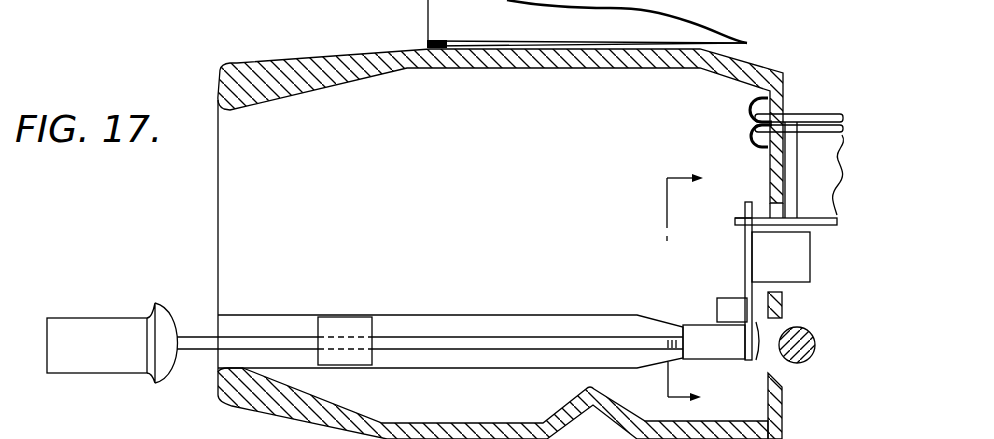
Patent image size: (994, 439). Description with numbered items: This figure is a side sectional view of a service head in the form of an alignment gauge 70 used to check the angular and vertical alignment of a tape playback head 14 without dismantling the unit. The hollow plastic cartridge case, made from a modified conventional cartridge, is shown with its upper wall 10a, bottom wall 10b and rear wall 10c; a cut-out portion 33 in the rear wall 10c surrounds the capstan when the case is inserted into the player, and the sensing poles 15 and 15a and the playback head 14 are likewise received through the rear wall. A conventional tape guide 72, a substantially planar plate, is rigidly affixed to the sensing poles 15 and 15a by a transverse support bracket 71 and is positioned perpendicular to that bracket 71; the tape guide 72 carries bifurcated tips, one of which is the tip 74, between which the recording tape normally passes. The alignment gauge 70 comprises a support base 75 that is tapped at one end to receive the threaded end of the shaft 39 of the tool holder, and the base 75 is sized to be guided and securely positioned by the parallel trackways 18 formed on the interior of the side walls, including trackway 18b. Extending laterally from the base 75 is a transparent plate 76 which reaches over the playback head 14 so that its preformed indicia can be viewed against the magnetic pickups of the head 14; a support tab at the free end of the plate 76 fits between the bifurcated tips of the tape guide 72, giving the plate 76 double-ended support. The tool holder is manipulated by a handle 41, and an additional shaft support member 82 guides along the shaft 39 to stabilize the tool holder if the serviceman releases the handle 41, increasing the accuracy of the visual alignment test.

The upper wall 10a is at (482, 70).
The bottom wall 10b is at (418, 424).
The rear wall 10c is at (782, 400).
The tape playback head 14 is at (810, 264).
The sensing pole 15 is at (808, 114).
The sensing pole 15a is at (842, 135).
The trackway 18 is at (667, 291).
The trackway 18b is at (514, 275).
The cut-out portion 33 is at (813, 356).
The shaft 39 is at (197, 350).
The handle 41 is at (77, 318).
The alignment gauge 70 is at (684, 269).
The transverse support bracket 71 is at (838, 190).
The tape guide 72 is at (818, 227).
The bifurcated tip 74 is at (735, 220).
The support base 75 is at (715, 350).
The transparent plate 76 is at (745, 273).
The shaft support member 82 is at (340, 318).